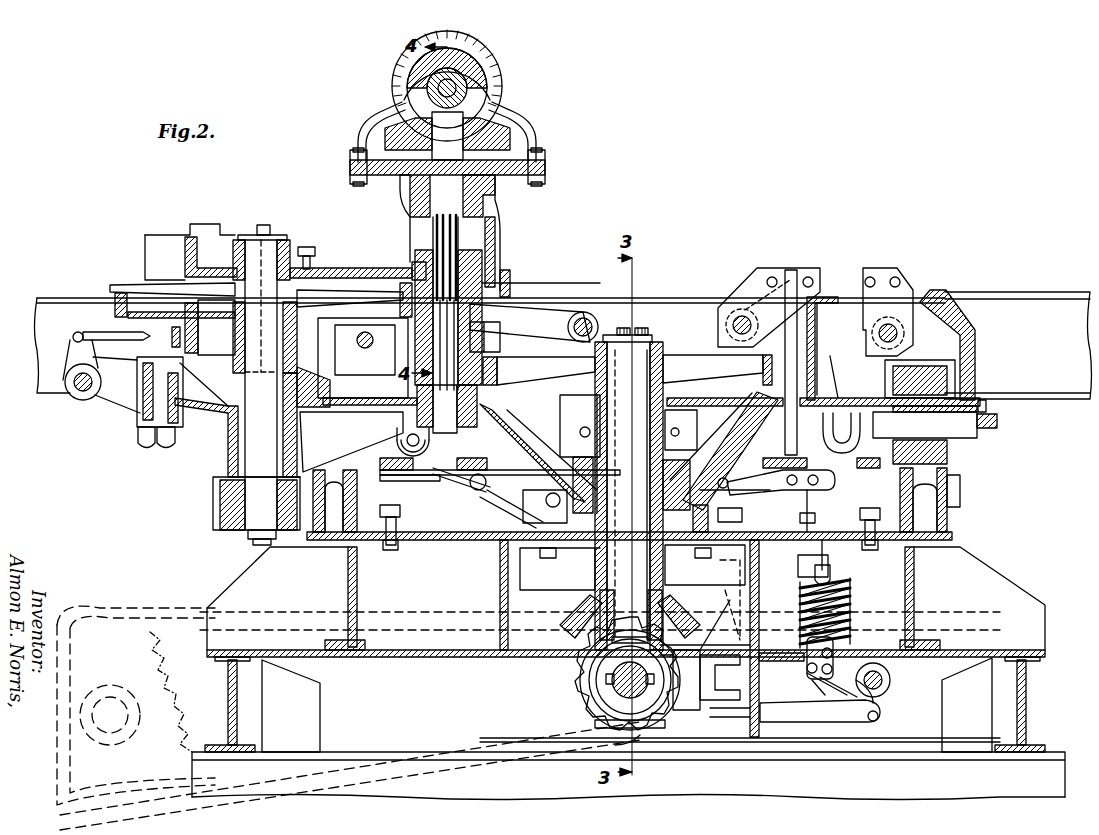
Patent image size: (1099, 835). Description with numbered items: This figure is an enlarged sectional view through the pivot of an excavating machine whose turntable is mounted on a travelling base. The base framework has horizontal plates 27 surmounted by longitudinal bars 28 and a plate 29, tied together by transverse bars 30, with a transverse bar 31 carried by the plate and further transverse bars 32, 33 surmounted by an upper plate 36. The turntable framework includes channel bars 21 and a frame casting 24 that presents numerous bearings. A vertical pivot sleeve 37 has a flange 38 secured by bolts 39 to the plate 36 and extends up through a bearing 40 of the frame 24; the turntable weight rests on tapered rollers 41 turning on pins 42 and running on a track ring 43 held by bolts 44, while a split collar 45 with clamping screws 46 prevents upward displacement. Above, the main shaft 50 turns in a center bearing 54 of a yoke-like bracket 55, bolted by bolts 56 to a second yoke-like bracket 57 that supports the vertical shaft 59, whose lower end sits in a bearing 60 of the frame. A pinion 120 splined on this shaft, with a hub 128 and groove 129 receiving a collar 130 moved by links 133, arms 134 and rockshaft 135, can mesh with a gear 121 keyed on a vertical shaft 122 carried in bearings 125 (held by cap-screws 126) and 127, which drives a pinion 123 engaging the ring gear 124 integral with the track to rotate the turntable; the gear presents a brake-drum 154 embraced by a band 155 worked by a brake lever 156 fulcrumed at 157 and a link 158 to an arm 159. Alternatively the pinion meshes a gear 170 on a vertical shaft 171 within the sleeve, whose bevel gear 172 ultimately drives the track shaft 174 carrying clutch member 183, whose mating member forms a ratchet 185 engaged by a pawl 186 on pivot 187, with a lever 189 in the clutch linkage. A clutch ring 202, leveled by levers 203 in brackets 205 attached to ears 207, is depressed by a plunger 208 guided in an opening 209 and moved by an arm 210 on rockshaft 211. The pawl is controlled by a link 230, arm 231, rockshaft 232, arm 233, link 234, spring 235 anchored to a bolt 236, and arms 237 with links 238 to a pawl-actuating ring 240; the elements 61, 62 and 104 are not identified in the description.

The channel bars 21 is at (75, 297).
The frame casting 24 is at (210, 432).
The horizontal plates 27 is at (283, 752).
The longitudinal bars 28 is at (940, 712).
The plate 29 is at (962, 650).
The transverse bars 30 is at (238, 695).
The transverse bar 31 is at (780, 742).
The transverse bars 32 is at (358, 590).
The transverse bars 33 is at (500, 606).
The plate 36 is at (425, 541).
The sleeve 37 is at (580, 552).
The flange 38 is at (740, 515).
The bolts 39 is at (557, 569).
The bearing 40 is at (575, 425).
The tapered rollers 41 is at (945, 462).
The pins 42 is at (960, 425).
The ring 43 is at (355, 480).
The bolts 44 is at (402, 514).
The collar 45 is at (697, 432).
The clamping screws 46 is at (690, 440).
The main shaft 50 is at (470, 92).
The center bearing 54 is at (412, 82).
The yoke-like bracket 55 is at (397, 118).
The bolts 56 is at (355, 188).
The second yoke-like bracket 57 is at (410, 205).
The vertical shaft 59 is at (457, 238).
The bearing 60 is at (470, 430).
The worm gear 61 is at (500, 140).
The gear 62 is at (482, 60).
The housing 104 is at (365, 348).
The pinion 120 is at (408, 372).
The gear 121 is at (360, 295).
The vertical shaft 122 is at (250, 455).
The pinion 123 is at (225, 510).
The ring gear 124 is at (300, 532).
The bearing 125 is at (236, 241).
The cap-screws 126 is at (305, 246).
The bearing 127 is at (320, 428).
The hub 128 is at (490, 314).
The groove 129 is at (415, 262).
The collar 130 is at (410, 268).
The links 133 is at (470, 290).
The arms 134 is at (540, 310).
The rockshaft 135 is at (584, 312).
The brake-drum 154 is at (325, 340).
The band 155 is at (382, 330).
The brake lever 156 is at (174, 358).
The fulcrum 157 is at (145, 362).
The link 158 is at (100, 332).
The arm 159 is at (72, 352).
The gear 170 is at (500, 362).
The vertical shaft 171 is at (645, 358).
The bevel gear 172 is at (575, 608).
The shaft 174 is at (618, 688).
The clutch member 183 is at (612, 680).
The ratchet 185 is at (590, 674).
The pawl 186 is at (720, 720).
The pivot 187 is at (718, 568).
The lever 189 is at (645, 738).
The clutch ring 202 is at (470, 458).
The levers 203 is at (490, 500).
The brackets 205 is at (488, 488).
The ears 207 is at (455, 476).
The plunger 208 is at (790, 343).
The opening 209 is at (848, 400).
The arm 210 is at (760, 292).
The rockshaft 211 is at (733, 322).
The link 230 is at (808, 718).
The arm 231 is at (897, 685).
The rockshaft 232 is at (890, 676).
The arm 233 is at (840, 688).
The link 234 is at (835, 648).
The spring 235 is at (848, 604).
The bolt 236 is at (835, 555).
The arms 237 is at (812, 685).
The links 238 is at (795, 559).
The pawl-actuating ring 240 is at (405, 476).